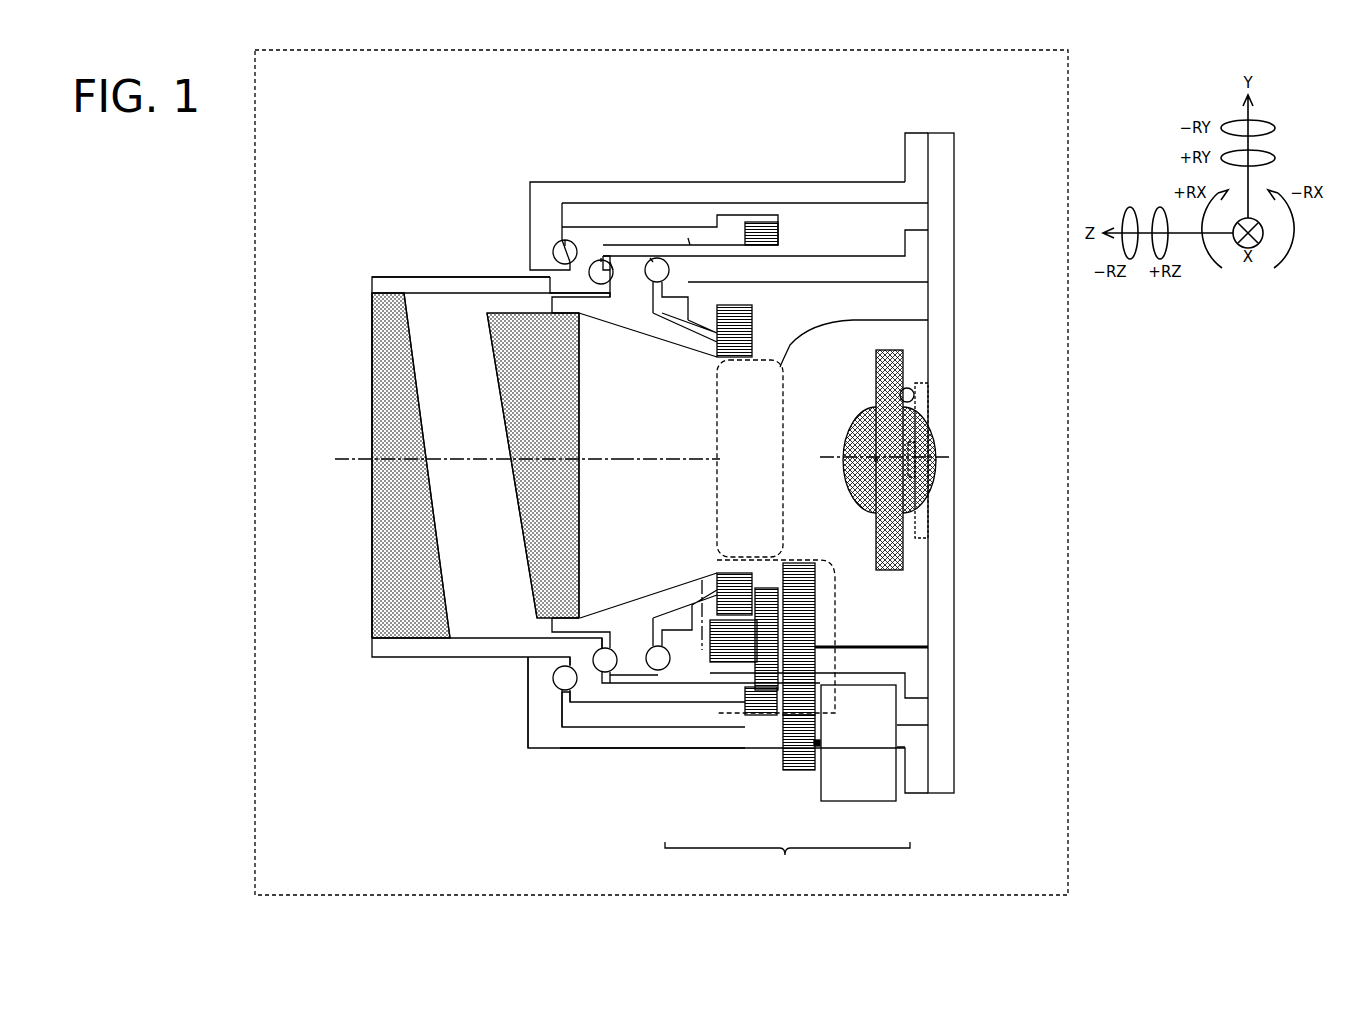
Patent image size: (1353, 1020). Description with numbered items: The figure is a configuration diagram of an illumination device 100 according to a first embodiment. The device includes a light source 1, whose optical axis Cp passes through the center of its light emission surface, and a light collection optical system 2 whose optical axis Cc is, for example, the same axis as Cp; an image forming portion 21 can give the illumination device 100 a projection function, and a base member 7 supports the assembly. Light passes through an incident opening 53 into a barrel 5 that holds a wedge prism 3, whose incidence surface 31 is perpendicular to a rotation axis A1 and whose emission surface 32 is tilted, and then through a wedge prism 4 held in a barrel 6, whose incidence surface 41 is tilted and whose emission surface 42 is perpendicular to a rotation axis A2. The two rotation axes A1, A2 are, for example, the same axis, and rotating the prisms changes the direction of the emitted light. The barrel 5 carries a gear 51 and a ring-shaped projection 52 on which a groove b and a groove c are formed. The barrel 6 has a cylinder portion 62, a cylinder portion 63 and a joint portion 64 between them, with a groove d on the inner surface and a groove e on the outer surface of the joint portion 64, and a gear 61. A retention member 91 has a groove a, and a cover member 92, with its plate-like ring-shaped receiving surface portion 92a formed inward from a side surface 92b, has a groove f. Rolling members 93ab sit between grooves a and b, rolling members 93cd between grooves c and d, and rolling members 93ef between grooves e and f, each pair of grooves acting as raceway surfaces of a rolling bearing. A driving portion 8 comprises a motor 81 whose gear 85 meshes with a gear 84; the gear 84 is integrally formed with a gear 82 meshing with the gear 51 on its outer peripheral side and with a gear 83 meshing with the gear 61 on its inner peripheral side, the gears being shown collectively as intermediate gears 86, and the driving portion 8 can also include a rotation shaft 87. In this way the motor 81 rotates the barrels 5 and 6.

The light source 1 is at (917, 450).
The light collection optical system 2 is at (903, 350).
The image forming portion 21 is at (910, 390).
The wedge prism 3 is at (507, 323).
The incidence surface 31 is at (580, 433).
The emission surface 32 is at (532, 537).
The wedge prism 4 is at (383, 325).
The incidence surface 41 is at (426, 427).
The emission surface 42 is at (372, 505).
The barrel 5 is at (552, 305).
The gear 51 is at (743, 307).
The projection 52 is at (633, 660).
The incident opening 53 is at (897, 320).
The barrel 6 is at (383, 282).
The gear 61 is at (765, 220).
The cylinder portion 62 is at (395, 276).
The cylinder portion 63 is at (700, 223).
The joint portion 64 is at (597, 262).
The base member 7 is at (950, 222).
The driving portion 8 is at (787, 862).
The motor 81 is at (887, 795).
The gear 82 is at (733, 690).
The gear 83 is at (767, 690).
The gear 84 is at (790, 712).
The gear 85 is at (807, 770).
The intermediate gears 86 is at (840, 613).
The rotation shaft 87 is at (928, 640).
The retention member 91 is at (920, 253).
The cover member 92 is at (843, 181).
The receiving surface portion 92a is at (528, 705).
The side surface 92b is at (598, 750).
The rolling members 93ab is at (652, 258).
The rolling members 93cd is at (603, 260).
The rolling members 93ef is at (555, 245).
The illumination device 100 is at (1075, 443).
The rotation axis A1 is at (583, 461).
The rotation axis A2 is at (362, 455).
The optical axis Cc is at (852, 453).
The optical axis Cp is at (918, 460).
The groove a is at (688, 238).
The groove b is at (648, 258).
The groove c is at (612, 268).
The groove d is at (602, 260).
The groove e is at (565, 246).
The groove f is at (548, 253).